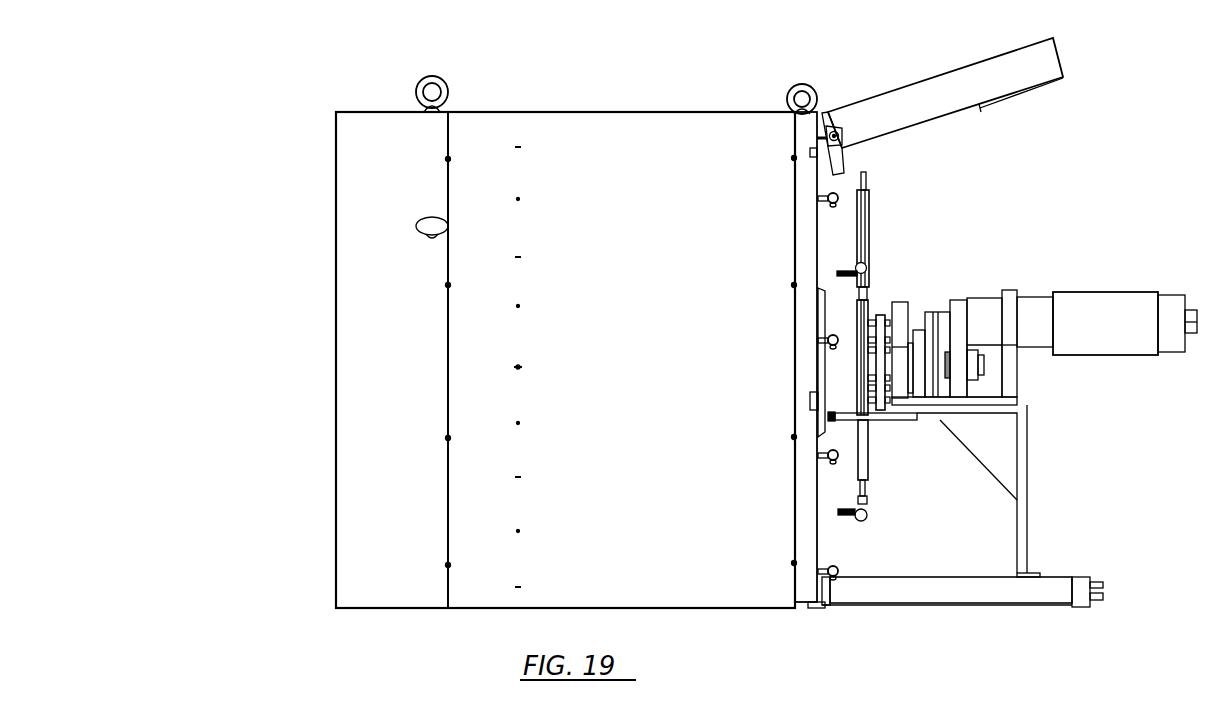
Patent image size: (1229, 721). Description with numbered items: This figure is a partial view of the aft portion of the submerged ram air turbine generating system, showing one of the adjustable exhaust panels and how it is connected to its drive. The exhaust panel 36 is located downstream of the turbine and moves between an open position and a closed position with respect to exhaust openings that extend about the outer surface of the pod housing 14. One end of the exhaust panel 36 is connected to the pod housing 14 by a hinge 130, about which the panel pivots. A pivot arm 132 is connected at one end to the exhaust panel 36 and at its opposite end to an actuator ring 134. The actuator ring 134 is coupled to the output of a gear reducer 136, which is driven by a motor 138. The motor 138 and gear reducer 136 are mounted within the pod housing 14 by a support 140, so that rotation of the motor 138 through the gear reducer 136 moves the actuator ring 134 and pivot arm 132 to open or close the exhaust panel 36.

The pod housing 14 is at (750, 112).
The exhaust panel 36 is at (923, 80).
The hinge 130 is at (838, 128).
The pivot arm 132 is at (869, 218).
The actuator ring 134 is at (870, 310).
The gear reducer 136 is at (950, 290).
The motor 138 is at (1090, 292).
The support 140 is at (1027, 447).